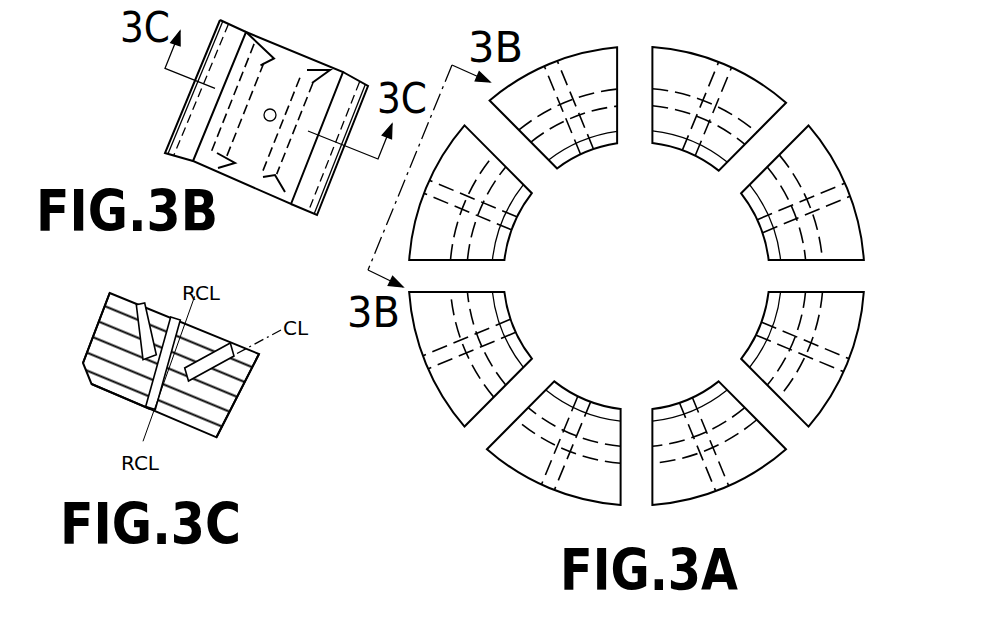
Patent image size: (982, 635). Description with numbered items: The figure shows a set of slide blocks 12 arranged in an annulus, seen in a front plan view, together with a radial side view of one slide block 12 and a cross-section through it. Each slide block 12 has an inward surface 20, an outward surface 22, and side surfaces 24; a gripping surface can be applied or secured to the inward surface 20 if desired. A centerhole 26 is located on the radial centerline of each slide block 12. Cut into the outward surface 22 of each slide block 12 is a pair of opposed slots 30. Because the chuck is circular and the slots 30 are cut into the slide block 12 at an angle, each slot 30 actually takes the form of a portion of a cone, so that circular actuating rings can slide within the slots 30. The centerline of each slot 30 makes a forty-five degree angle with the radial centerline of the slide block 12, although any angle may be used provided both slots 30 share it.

In FIG. 3A, the slide block 12 is at (838, 327).
In FIG. 3B, the outward surface 22 is at (247, 164).
In FIG. 3C, the outward surface 22 is at (177, 317).
In FIG. 3B, the centerhole 26 is at (272, 108).
In FIG. 3C, the centerhole 26 is at (145, 408).
In FIG. 3C, the inward surface 20 is at (98, 394).
In FIG. 3C, the side surface 24 is at (93, 330).
In FIG. 3C, the slot 30 is at (128, 317).